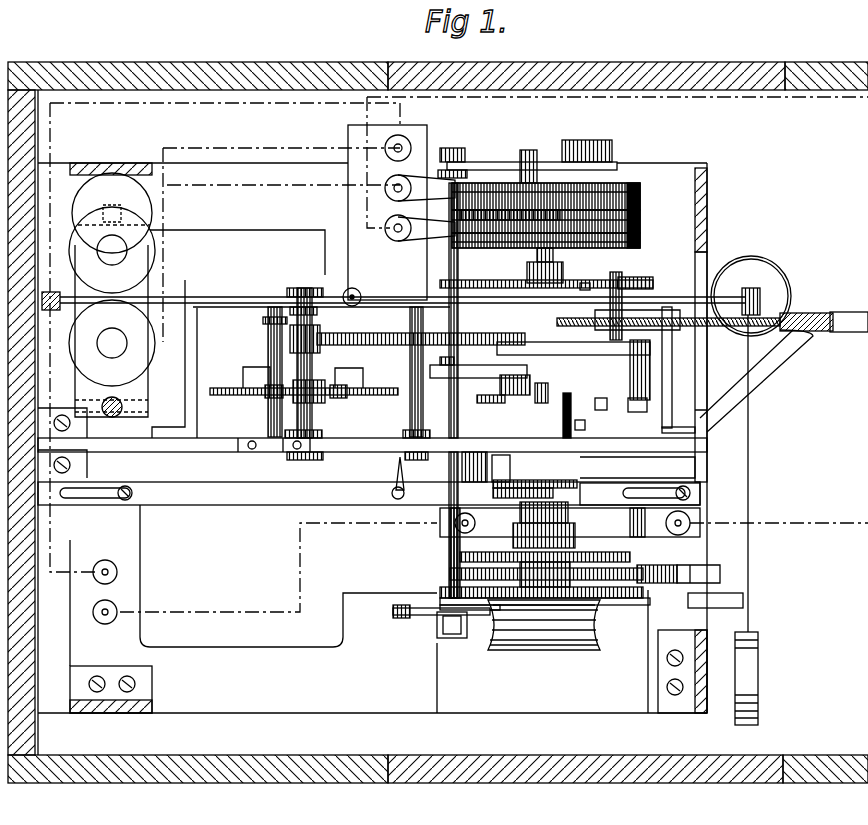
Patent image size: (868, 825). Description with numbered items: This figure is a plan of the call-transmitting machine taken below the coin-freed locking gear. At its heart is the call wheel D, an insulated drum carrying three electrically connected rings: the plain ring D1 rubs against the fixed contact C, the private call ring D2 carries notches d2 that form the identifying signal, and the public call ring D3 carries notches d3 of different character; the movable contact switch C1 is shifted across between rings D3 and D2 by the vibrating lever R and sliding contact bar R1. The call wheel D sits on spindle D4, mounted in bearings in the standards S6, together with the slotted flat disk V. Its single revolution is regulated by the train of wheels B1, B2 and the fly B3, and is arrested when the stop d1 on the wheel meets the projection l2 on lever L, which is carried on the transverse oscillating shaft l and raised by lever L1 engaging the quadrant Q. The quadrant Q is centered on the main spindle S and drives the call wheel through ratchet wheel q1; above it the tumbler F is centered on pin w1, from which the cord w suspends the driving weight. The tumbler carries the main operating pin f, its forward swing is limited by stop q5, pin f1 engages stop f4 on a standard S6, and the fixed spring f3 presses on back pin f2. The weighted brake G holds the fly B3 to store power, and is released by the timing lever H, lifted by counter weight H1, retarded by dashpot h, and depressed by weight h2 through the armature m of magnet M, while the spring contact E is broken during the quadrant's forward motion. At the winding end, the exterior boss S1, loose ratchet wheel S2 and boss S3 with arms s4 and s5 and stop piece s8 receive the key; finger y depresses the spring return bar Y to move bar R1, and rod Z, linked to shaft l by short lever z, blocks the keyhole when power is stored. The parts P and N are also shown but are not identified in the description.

The weight h2 is at (112, 213).
The electric magnet M is at (145, 260).
The armature m is at (105, 296).
The standards S6 is at (200, 306).
The timing lever H is at (250, 285).
The vibrating lever R is at (390, 255).
The fixed contact C is at (420, 188).
The movable contact switch C1 is at (420, 232).
The lever L is at (487, 168).
The stop d1 is at (527, 150).
The projection l2 is at (567, 162).
The call wheel D is at (600, 198).
The plain ring D1 is at (622, 192).
The public call ring D3 is at (627, 213).
The private call ring D2 is at (627, 240).
The notches d3 is at (510, 202).
The oscillating shaft l is at (449, 468).
The notches d2 is at (508, 262).
The spindle D4 is at (557, 282).
The flat disk V is at (590, 288).
The main operating pin f is at (624, 285).
The train wheel B1 is at (640, 320).
The dashpot h is at (751, 296).
The cord w is at (826, 330).
The pin w1 is at (668, 330).
The train wheel B2 is at (405, 374).
The fly B3 is at (304, 382).
The weighted brake G is at (318, 403).
The lever L1 is at (354, 383).
The stop q5 is at (470, 378).
The ratchet wheel q1 is at (588, 356).
The quadrant Q is at (501, 389).
The tumbler F is at (652, 348).
The pin f1 is at (540, 406).
The main spindle S is at (575, 415).
The fixed spring f3 is at (598, 400).
The stop f4 is at (586, 425).
The back pin f2 is at (640, 397).
The sliding contact bar R1 is at (321, 468).
The spring return bar Y is at (500, 468).
The arm s5 is at (535, 473).
The stop piece s8 is at (678, 560).
The finger y is at (510, 493).
The arm s4 is at (640, 495).
The boss S3 is at (544, 525).
The spring contact E is at (570, 553).
The loose ratchet wheel S2 is at (438, 548).
The short lever z is at (425, 616).
The rod Z is at (495, 612).
The exterior boss S1 is at (555, 625).
The counter weight H1 is at (761, 520).
The pulley P is at (117, 570).
The pulley N is at (117, 610).